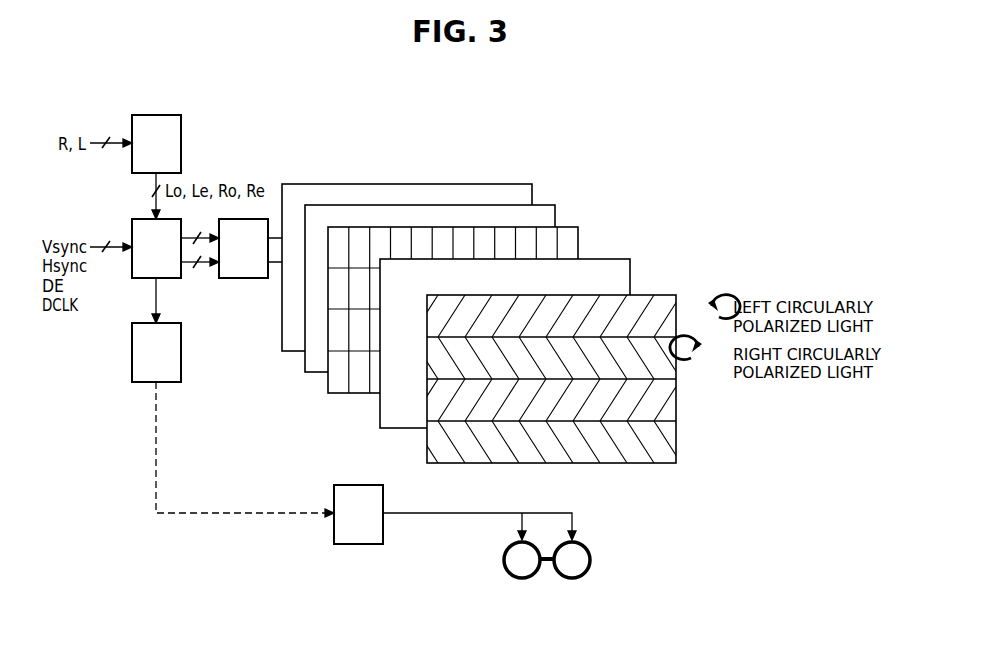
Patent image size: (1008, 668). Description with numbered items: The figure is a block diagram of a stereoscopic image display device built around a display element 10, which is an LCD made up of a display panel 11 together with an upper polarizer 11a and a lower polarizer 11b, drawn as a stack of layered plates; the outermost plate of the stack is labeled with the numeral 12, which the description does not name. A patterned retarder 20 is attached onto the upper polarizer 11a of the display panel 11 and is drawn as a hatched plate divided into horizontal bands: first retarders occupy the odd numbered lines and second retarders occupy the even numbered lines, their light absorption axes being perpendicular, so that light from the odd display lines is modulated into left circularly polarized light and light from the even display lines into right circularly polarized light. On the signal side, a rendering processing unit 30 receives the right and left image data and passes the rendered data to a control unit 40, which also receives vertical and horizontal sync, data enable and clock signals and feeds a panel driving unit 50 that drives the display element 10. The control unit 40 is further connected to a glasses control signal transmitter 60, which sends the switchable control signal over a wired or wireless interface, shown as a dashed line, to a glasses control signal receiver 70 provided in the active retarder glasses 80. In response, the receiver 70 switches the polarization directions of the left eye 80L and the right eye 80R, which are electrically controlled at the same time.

The display element 10 is at (464, 281).
The display panel 11 is at (571, 227).
The upper polarizer 11a is at (512, 323).
The lower polarizer 11b is at (541, 205).
The polarizing film 12 is at (527, 184).
The patterned retarder 20 is at (651, 295).
The rendering processing unit 30 is at (146, 154).
The control unit 40 is at (146, 258).
The panel driving unit 50 is at (233, 258).
The glasses control signal transmitter 60 is at (146, 362).
The glasses control signal receiver 70 is at (348, 524).
The active retarder glasses 80 is at (590, 585).
The left eye 80L is at (522, 578).
The right eye 80R is at (572, 578).